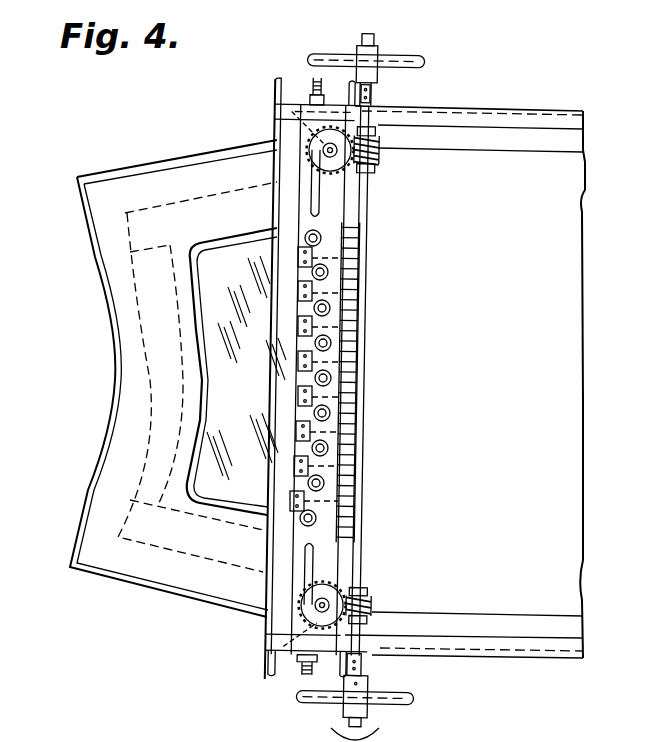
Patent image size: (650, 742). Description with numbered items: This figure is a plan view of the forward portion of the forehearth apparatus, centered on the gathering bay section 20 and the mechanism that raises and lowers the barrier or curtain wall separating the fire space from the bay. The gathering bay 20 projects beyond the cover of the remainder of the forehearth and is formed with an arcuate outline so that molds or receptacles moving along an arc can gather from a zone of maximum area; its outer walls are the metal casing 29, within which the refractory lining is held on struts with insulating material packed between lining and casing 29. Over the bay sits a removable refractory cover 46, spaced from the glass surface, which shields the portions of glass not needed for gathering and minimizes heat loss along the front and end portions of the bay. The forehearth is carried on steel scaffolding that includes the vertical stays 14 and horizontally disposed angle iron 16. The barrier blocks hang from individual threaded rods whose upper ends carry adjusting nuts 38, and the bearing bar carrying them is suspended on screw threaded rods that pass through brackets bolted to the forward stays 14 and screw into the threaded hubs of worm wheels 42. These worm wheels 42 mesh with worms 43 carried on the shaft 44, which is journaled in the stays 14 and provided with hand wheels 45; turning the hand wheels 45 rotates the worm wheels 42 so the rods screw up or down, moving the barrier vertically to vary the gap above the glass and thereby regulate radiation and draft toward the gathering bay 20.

The vertical stays 14 is at (275, 93).
The angle iron 16 is at (500, 110).
The gathering bay section 20 is at (236, 371).
The metal casing 29 is at (80, 527).
The adjusting nuts 38 is at (324, 482).
The worm wheels 42 is at (345, 167).
The worms 43 is at (378, 158).
The shaft 44 is at (362, 553).
The hand wheels 45 is at (413, 63).
The cover 46 is at (173, 257).